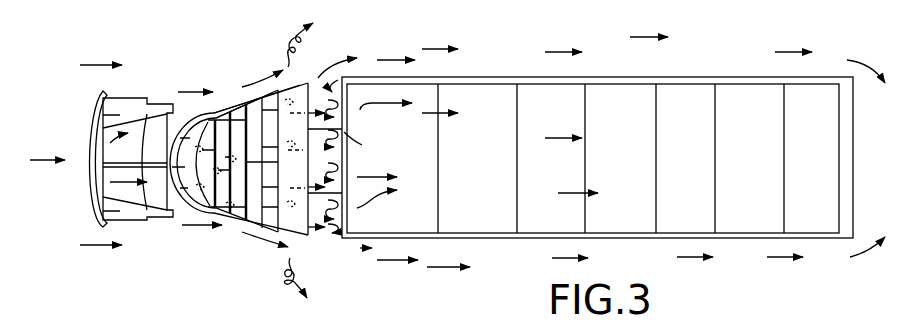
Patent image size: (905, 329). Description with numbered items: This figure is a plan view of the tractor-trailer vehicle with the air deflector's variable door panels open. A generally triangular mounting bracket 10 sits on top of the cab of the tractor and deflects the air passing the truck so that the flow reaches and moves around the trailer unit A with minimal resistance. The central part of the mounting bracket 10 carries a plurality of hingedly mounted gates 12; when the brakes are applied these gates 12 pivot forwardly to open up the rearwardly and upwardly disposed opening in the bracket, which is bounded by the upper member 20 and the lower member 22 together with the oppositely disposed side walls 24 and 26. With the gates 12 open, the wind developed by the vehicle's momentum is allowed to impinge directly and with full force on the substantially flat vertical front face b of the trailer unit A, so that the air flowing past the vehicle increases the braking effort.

The mounting bracket 10 is at (237, 222).
The hingedly mounted gates 12 is at (238, 120).
The upper member 20 is at (300, 163).
The lower member 22 is at (180, 137).
The side wall 24 is at (290, 238).
The side wall 26 is at (293, 82).
The flat vertical front face b is at (348, 140).
The trailer unit A is at (605, 210).